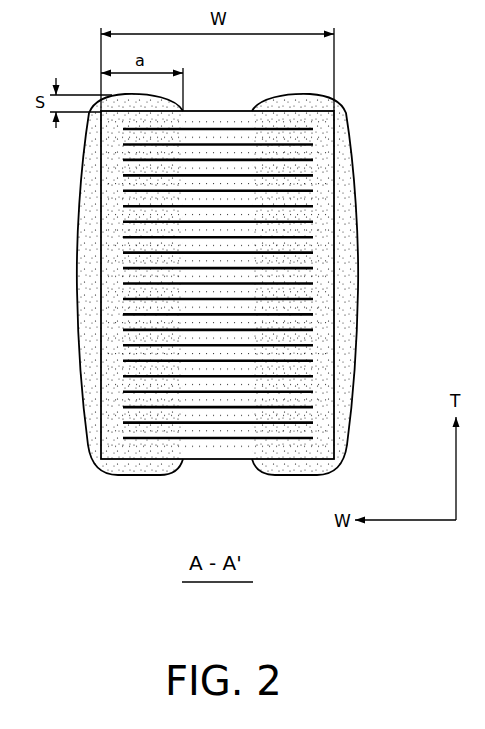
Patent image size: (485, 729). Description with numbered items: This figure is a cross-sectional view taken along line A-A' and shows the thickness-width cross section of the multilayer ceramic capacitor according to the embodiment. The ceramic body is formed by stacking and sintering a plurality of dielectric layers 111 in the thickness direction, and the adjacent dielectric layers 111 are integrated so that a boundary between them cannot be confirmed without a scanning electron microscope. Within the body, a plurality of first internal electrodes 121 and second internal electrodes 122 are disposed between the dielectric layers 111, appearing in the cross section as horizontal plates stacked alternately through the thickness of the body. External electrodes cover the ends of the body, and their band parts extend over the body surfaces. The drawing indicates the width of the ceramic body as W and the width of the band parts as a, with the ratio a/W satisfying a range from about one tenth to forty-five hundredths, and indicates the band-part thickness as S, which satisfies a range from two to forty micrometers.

The dielectric layer 111 is at (293, 200).
The first internal electrode 121 is at (305, 148).
The second internal electrode 122 is at (303, 162).